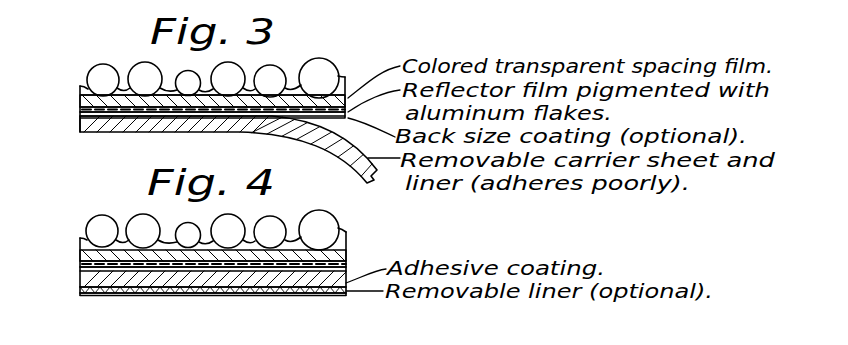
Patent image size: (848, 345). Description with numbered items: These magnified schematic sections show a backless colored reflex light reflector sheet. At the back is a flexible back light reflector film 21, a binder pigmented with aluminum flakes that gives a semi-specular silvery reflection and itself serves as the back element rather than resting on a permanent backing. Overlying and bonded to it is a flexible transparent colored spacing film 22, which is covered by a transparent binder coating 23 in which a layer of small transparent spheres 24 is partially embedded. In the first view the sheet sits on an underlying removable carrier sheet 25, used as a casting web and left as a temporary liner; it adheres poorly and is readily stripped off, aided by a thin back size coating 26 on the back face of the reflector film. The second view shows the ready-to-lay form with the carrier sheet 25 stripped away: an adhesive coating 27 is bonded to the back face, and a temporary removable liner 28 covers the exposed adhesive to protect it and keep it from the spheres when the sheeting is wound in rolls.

In FIG. 3, the back light reflector film 21 is at (82, 107).
In FIG. 4, the back light reflector film 21 is at (82, 262).
In FIG. 3, the transparent colored spacing film 22 is at (82, 100).
In FIG. 4, the transparent colored spacing film 22 is at (82, 250).
In FIG. 3, the transparent binder coating 23 is at (85, 87).
In FIG. 4, the transparent binder coating 23 is at (82, 236).
In FIG. 3, the transparent spheres 24 is at (100, 72).
In FIG. 4, the transparent spheres 24 is at (100, 232).
In FIG. 3, the removable carrier sheet 25 is at (88, 133).
In FIG. 3, the back size coating 26 is at (82, 113).
In FIG. 4, the back size coating 26 is at (82, 268).
In FIG. 4, the adhesive coating 27 is at (80, 287).
In FIG. 4, the removable liner 28 is at (112, 288).